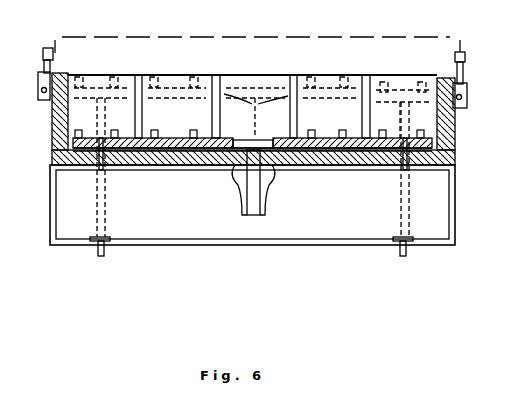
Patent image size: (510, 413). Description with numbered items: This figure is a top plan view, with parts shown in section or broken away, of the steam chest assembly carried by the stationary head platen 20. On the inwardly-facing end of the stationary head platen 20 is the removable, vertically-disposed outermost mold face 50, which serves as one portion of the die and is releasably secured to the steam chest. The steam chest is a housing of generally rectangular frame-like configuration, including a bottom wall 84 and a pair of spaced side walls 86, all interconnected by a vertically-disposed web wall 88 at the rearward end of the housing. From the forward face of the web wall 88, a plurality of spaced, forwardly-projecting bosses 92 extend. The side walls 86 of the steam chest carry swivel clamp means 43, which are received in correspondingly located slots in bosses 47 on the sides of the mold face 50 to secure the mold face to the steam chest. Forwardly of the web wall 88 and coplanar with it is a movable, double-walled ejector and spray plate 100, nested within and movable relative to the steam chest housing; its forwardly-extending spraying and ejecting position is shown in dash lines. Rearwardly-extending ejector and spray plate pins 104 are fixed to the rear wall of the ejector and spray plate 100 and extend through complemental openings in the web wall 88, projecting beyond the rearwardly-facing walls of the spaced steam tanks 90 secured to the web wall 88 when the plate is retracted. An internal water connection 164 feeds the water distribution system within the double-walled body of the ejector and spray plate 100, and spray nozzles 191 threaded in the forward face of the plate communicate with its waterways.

The stationary head platen 20 is at (455, 218).
The swivel clamp means 43 is at (43, 53).
The bosses 47 is at (52, 48).
The mold face 50 is at (300, 36).
The bottom wall 84 is at (124, 120).
The side walls 86 is at (52, 124).
The web wall 88 is at (348, 152).
The steam tanks 90 is at (204, 207).
The bosses 92 is at (256, 107).
The ejector and spray plate 100 is at (168, 75).
The ejector and spray plate pins 104 is at (104, 250).
The internal water connection 164 is at (266, 202).
The spray nozzles 191 is at (80, 75).